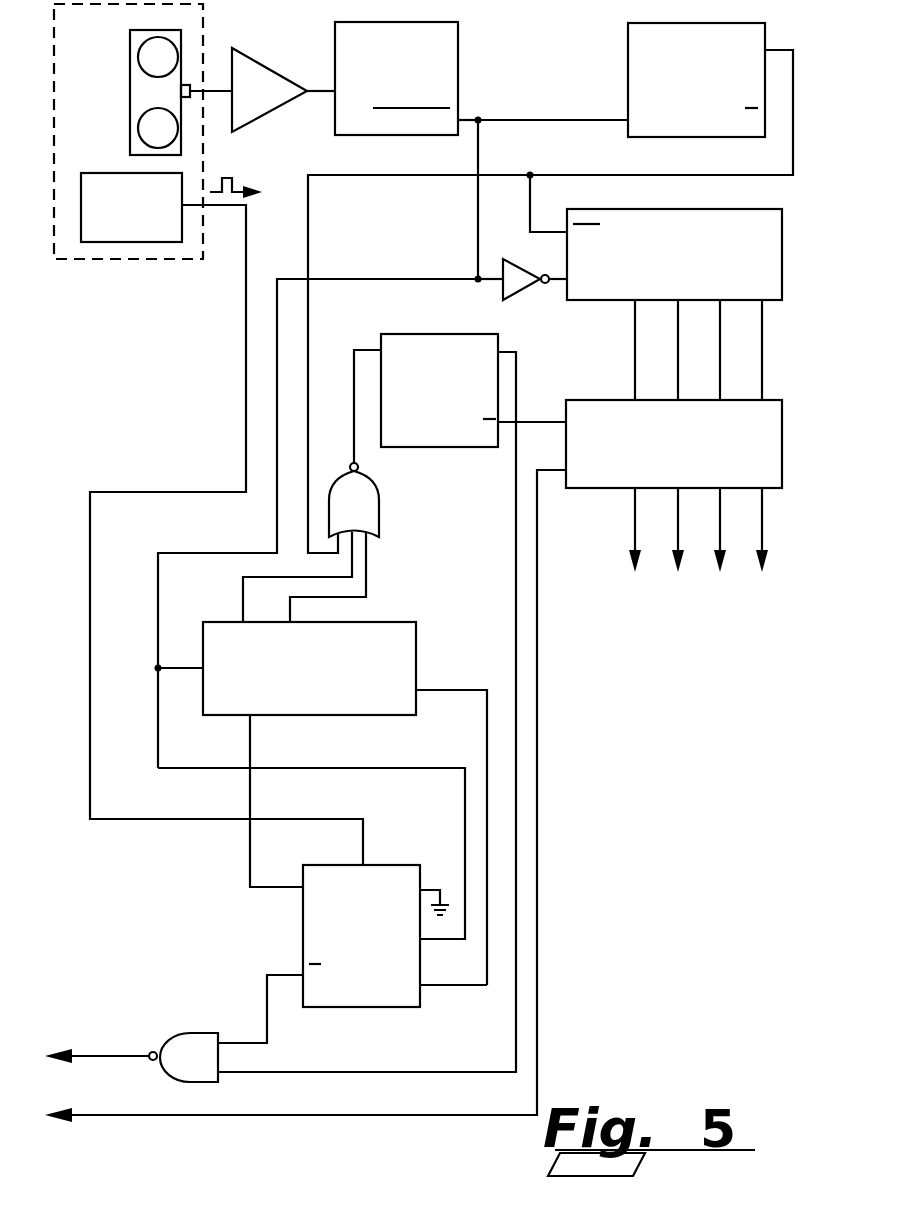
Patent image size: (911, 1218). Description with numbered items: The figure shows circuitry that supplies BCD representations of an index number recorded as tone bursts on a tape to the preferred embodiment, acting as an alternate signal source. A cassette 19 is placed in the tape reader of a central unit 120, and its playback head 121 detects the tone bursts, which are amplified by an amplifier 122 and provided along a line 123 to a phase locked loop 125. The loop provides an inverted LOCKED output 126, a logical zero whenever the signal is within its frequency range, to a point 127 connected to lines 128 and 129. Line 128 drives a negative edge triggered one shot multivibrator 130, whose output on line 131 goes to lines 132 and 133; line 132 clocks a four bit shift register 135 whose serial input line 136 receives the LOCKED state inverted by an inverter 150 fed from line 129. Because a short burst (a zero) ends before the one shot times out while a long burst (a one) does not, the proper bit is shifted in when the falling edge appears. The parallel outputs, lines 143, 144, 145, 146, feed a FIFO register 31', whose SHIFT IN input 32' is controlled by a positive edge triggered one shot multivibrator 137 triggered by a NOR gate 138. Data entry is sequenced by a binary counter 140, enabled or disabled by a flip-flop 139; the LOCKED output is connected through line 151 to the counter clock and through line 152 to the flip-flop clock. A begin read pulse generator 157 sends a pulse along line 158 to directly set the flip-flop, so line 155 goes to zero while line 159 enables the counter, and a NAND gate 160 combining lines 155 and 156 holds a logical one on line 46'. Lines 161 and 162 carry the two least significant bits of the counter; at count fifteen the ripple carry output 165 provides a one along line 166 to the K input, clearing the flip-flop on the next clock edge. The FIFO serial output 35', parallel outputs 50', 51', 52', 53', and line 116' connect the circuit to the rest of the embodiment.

The cassette 19 is at (130, 60).
The central unit 120 is at (203, 48).
The playback head 121 is at (187, 84).
The amplifier 122 is at (266, 118).
The line 123 is at (318, 92).
The phase locked loop 125 is at (458, 55).
The inverted LOCKED output 126 is at (463, 114).
The point 127 is at (481, 118).
The line 128 is at (588, 120).
The line 129 is at (478, 150).
The negative edge triggered one shot multivibrator 130 is at (627, 42).
The line 131 is at (793, 143).
The line 132 is at (528, 213).
The line 133 is at (308, 213).
The four bit shift register 135 is at (605, 300).
The line 136 is at (557, 274).
The positive edge triggered one shot multivibrator 137 is at (429, 334).
The NOR gate 138 is at (379, 501).
The flip-flop 139 is at (303, 923).
The binary counter 140 is at (418, 633).
The line 143 is at (633, 356).
The line 144 is at (676, 359).
The line 145 is at (718, 359).
The line 146 is at (760, 359).
The inverter 150 is at (526, 289).
The line 151 is at (243, 553).
The line 152 is at (433, 768).
The line 155 is at (267, 998).
The line 156 is at (389, 1072).
The begin read pulse generator 157 is at (100, 173).
The line 158 is at (246, 346).
The line 159 is at (288, 751).
The NAND gate 160 is at (203, 1033).
The line 161 is at (243, 586).
The line 162 is at (400, 559).
The ripple carry output 165 is at (421, 681).
The line 166 is at (485, 996).
The FIFO register 31' is at (683, 421).
The SHIFT IN input 32' is at (532, 398).
The FIFO serial output line 35' is at (315, 796).
The line 46' is at (97, 1037).
The line 116' is at (179, 1100).
The FIFO output Q0 line 50' is at (753, 530).
The FIFO output Q1 line 51' is at (709, 530).
The FIFO output Q2 line 52' is at (666, 530).
The FIFO output Q3 line 53' is at (621, 530).